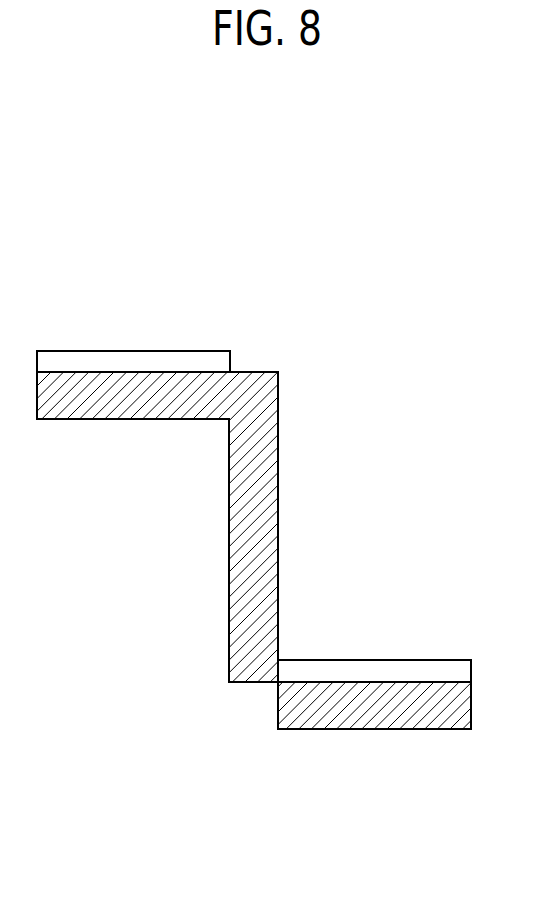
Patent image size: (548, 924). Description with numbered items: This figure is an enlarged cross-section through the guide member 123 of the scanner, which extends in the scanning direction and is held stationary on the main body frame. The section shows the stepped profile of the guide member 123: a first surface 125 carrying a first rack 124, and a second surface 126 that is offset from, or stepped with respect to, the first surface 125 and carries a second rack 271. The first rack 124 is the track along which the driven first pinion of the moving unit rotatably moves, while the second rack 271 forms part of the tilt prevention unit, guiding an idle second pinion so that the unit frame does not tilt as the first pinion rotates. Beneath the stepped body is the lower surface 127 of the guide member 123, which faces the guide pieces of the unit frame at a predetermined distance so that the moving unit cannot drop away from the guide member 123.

The guide member 123 is at (238, 550).
The second rack 271 is at (97, 351).
The second surface 126 is at (166, 372).
The first rack 124 is at (382, 661).
The first surface 125 is at (323, 682).
The lower surface 127 is at (425, 730).